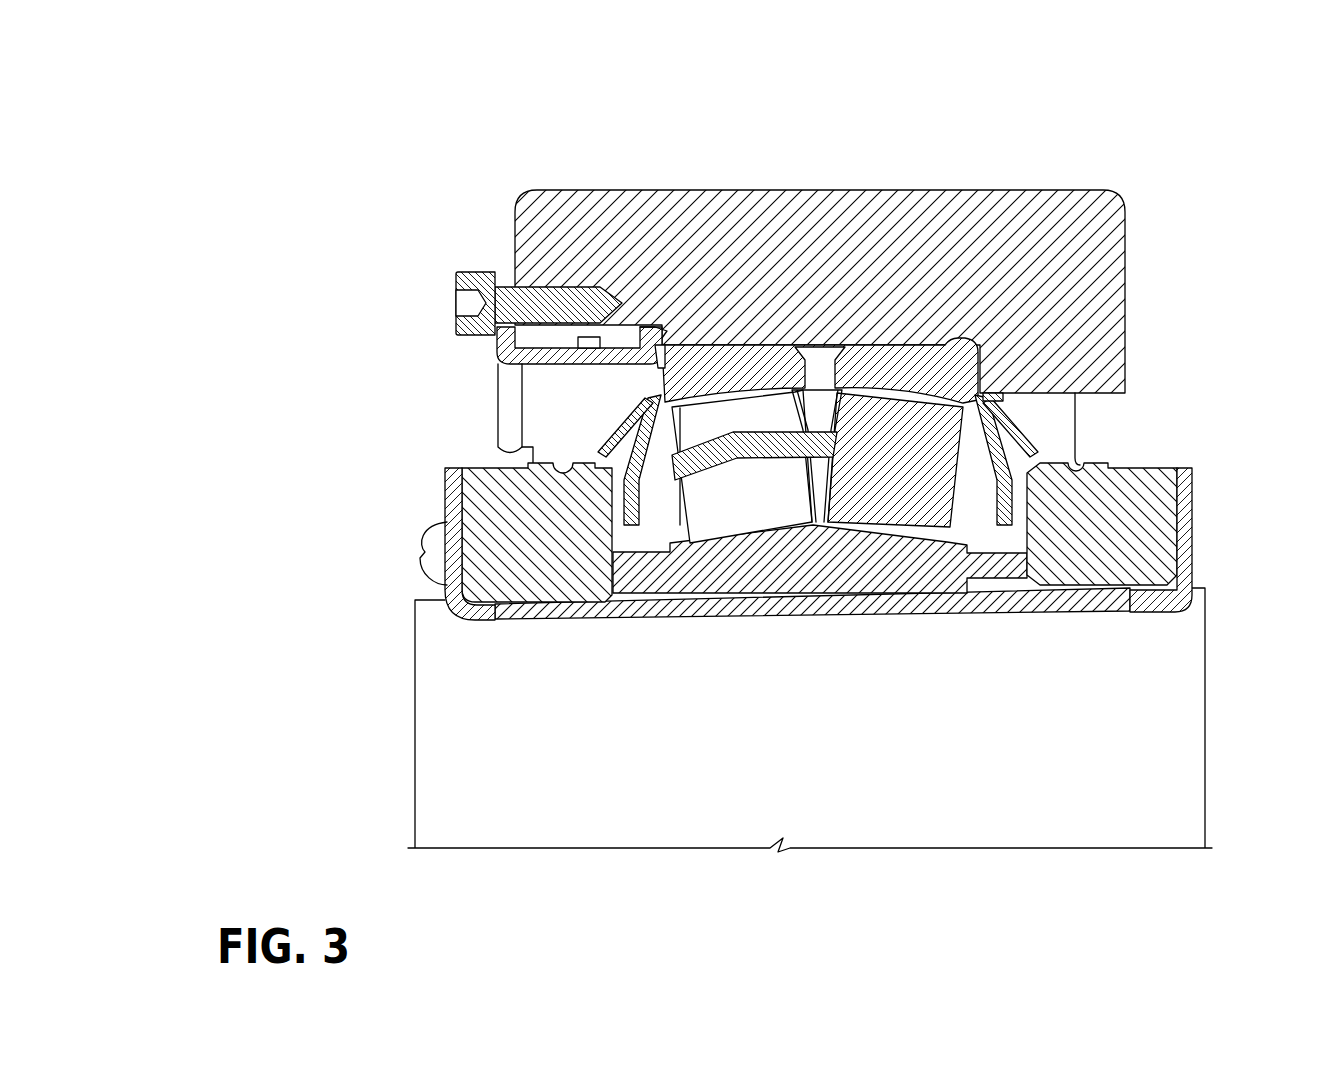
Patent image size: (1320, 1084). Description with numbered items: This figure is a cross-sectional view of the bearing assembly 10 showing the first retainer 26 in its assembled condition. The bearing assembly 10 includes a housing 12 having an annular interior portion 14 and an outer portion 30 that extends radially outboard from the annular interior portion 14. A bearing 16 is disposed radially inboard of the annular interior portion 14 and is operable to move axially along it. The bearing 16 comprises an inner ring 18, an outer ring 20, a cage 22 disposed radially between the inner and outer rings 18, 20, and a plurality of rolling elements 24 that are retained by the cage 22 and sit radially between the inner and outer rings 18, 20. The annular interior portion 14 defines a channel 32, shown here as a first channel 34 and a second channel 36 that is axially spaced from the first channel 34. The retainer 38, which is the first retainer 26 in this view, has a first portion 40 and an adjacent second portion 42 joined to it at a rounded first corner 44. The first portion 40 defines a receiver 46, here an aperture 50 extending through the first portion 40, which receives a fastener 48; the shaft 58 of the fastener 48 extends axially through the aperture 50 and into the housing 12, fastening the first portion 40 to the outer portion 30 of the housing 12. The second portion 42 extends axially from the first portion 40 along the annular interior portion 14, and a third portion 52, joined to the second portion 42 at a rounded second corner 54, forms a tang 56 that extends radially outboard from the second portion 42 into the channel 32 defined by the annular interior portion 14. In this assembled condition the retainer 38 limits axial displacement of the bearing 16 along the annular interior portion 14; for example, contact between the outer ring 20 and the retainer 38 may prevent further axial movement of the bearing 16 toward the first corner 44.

The bearing assembly 10 is at (1093, 160).
The housing 12 is at (1000, 225).
The annular interior portion 14 is at (812, 345).
The bearing 16 is at (985, 458).
The inner ring 18 is at (860, 572).
The outer ring 20 is at (958, 343).
The cage 22 is at (862, 395).
The rolling elements 24 is at (773, 485).
The first retainer 26 is at (548, 420).
The outer portion 30 is at (525, 279).
The channel 32 is at (620, 199).
The first channel 34 is at (645, 316).
The second channel 36 is at (598, 328).
The retainer 38 is at (576, 429).
The first portion 40 is at (497, 345).
The second portion 42 is at (445, 435).
The first corner 44 is at (512, 362).
The receiver 46 is at (539, 189).
The fastener 48 is at (478, 189).
The aperture 50 is at (539, 189).
The third portion 52 is at (718, 204).
The second corner 54 is at (914, 283).
The tang 56 is at (665, 324).
The shaft 58 is at (521, 266).